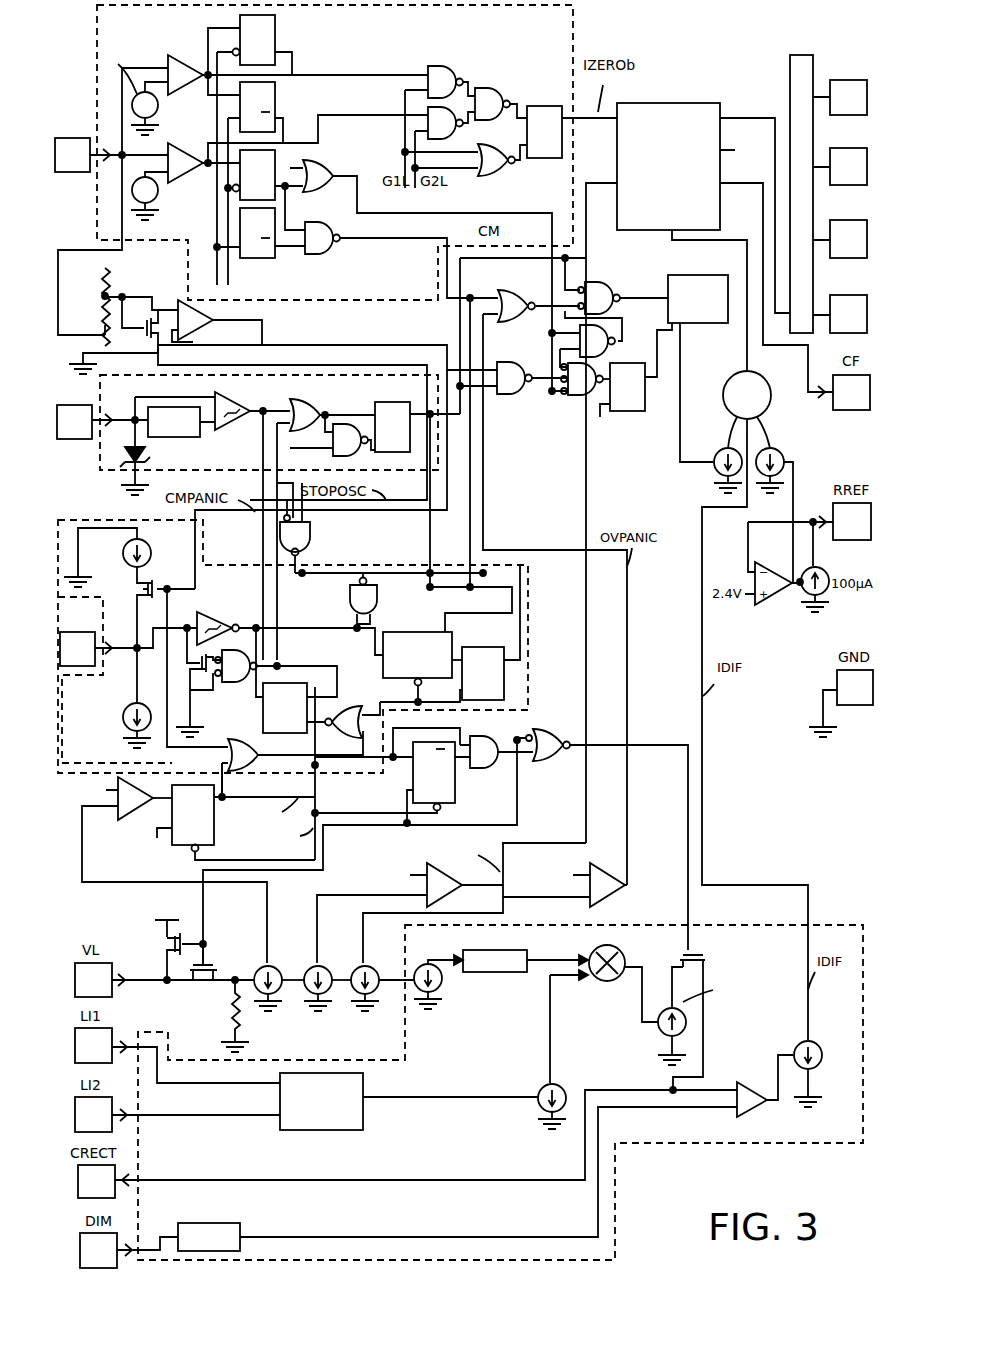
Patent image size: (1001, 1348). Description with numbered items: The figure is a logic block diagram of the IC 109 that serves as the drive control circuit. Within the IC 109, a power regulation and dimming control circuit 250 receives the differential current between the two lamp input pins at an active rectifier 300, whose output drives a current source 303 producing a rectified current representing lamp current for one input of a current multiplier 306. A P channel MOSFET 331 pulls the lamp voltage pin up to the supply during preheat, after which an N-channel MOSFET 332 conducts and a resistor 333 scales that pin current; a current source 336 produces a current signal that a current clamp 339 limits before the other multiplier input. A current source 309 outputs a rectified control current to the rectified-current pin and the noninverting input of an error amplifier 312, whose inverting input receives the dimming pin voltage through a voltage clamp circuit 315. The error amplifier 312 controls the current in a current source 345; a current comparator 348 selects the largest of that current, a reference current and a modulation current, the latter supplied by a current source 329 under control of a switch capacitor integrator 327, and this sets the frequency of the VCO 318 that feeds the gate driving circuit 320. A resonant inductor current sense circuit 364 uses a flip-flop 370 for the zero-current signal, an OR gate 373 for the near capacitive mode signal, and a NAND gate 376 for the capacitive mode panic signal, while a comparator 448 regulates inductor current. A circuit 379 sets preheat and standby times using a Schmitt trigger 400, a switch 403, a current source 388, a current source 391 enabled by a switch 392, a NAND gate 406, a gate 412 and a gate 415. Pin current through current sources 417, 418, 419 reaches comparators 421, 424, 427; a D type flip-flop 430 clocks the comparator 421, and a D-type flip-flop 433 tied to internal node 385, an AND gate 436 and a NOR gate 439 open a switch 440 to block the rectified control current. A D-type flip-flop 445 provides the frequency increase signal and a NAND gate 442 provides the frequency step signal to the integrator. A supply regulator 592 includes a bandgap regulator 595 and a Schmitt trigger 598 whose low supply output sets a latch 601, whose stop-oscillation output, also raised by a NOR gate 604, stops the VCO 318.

The resonant inductor current sense circuit 364 is at (97, 50).
The flip-flop 370 is at (542, 106).
The OR gate 373 is at (322, 160).
The NAND gate 376 is at (333, 258).
The VCO 318 is at (668, 104).
The gate driving circuit 320 is at (790, 72).
The switch capacitor integrator 327 is at (714, 274).
The NAND gate 442 is at (602, 287).
The D-type flip-flop 445 is at (600, 394).
The comparator 448 is at (172, 294).
The current comparator 348 is at (773, 397).
The current source 329 is at (712, 470).
The bandgap regulator 595 is at (258, 517).
The Schmitt trigger 598 is at (238, 430).
The supply regulator 592 is at (90, 455).
The latch 601 is at (382, 402).
The preheat and standby timing circuit 379 is at (293, 644).
The current source 391 is at (151, 556).
The switch 392 is at (149, 585).
The NOR gate 604 is at (278, 553).
The internal node 385 is at (398, 567).
The Schmitt trigger 400 is at (212, 614).
The NAND gate 406 is at (352, 598).
The switch 403 is at (208, 680).
The gate 415 is at (228, 684).
The gate 412 is at (228, 757).
The current source 388 is at (128, 705).
The comparator 421 is at (124, 812).
The D type flip-flop 430 is at (213, 773).
The AND gate 436 is at (468, 745).
The D-type flip-flop 433 is at (460, 795).
The NOR gate 439 is at (540, 762).
The comparator 424 is at (432, 862).
The comparator 427 is at (603, 872).
The P channel MOSFET 331 is at (185, 936).
The N-channel MOSFET 332 is at (207, 964).
The resistor 333 is at (230, 1012).
The current source 417 is at (275, 965).
The current source 418 is at (322, 964).
The current source 419 is at (378, 957).
The current source 336 is at (441, 989).
The current clamp 339 is at (497, 978).
The current multiplier 306 is at (606, 982).
The switch 440 is at (713, 958).
The current source 309 is at (658, 1034).
The current source 303 is at (543, 1110).
The error amplifier 312 is at (735, 1112).
The current source 345 is at (822, 1044).
The power regulation and dimming control circuit 250 is at (845, 920).
The active rectifier 300 is at (288, 1130).
The voltage clamp circuit 315 is at (208, 1224).
The IC 109 is at (820, 782).